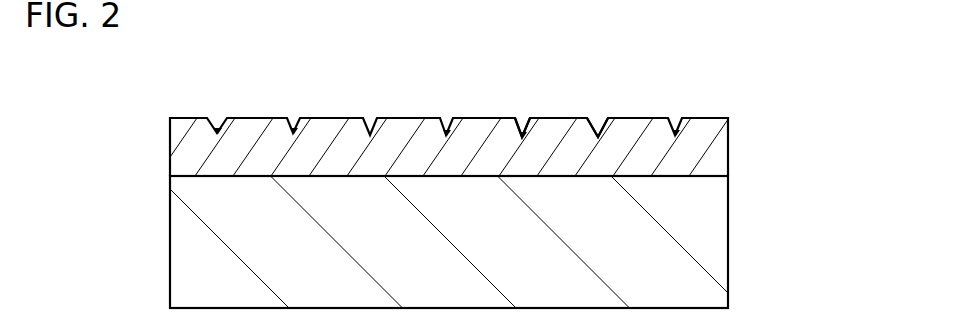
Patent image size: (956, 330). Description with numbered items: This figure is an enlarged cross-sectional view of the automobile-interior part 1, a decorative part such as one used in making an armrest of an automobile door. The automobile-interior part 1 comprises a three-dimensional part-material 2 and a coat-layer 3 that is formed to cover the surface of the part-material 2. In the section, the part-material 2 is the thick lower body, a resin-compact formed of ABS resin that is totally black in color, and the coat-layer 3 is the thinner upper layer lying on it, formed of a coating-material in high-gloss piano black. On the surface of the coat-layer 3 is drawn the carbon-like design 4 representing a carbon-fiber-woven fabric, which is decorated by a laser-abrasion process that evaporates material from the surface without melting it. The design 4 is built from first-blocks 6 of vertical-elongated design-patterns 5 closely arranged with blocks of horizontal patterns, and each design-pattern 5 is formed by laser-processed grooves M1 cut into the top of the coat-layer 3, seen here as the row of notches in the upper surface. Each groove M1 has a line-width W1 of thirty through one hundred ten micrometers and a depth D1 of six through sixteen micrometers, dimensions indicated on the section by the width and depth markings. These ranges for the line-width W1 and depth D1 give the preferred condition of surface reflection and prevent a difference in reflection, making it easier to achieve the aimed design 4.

The automobile-interior part 1 is at (752, 68).
The part-material 2 is at (728, 228).
The coat-layer 3 is at (728, 153).
The carbon-like design 4 is at (503, 107).
The vertical-elongated design-pattern 5 is at (528, 118).
The first-block 6 is at (608, 118).
The laser-processed groove M1 is at (223, 127).
The line-width W1 is at (165, 88).
The depth D1 is at (217, 133).